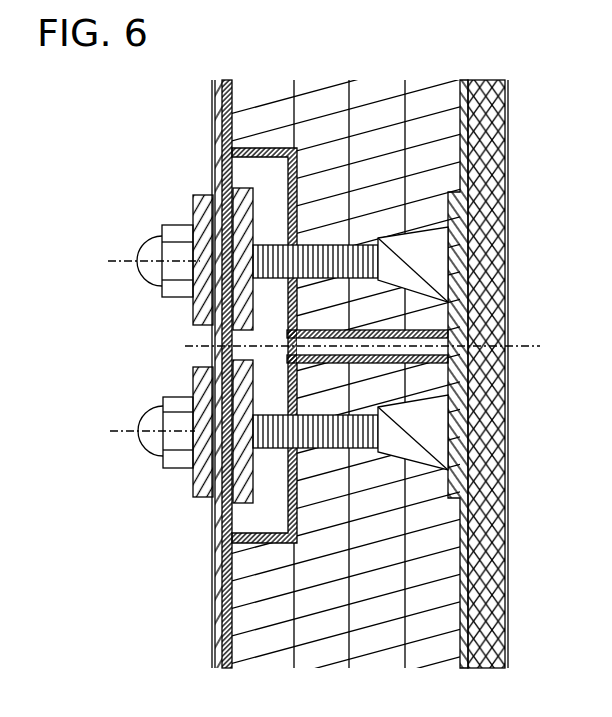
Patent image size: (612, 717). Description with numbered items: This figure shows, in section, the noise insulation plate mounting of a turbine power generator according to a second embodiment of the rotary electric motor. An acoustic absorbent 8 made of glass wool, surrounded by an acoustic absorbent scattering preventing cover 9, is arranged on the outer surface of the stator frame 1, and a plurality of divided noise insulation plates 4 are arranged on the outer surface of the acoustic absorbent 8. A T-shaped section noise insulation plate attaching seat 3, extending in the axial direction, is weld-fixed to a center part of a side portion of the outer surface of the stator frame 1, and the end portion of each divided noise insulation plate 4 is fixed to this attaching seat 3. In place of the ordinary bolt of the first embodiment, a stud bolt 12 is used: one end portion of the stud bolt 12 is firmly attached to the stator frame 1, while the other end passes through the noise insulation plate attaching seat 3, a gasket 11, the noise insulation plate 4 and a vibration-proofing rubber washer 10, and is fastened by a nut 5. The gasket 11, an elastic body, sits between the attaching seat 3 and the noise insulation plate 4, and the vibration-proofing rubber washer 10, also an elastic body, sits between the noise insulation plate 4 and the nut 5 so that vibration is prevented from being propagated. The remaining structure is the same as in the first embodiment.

The stator frame 1 is at (508, 585).
The noise insulation plate attaching seat 3 is at (243, 334).
The noise insulation plate 4 is at (215, 612).
The nut 5 is at (172, 422).
The acoustic absorbent 8 is at (443, 103).
The acoustic absorbent scattering preventing cover 9 is at (465, 159).
The vibration-proofing rubber washer 10 is at (193, 383).
The gasket 11 is at (233, 504).
The stud bolt 12 is at (428, 262).